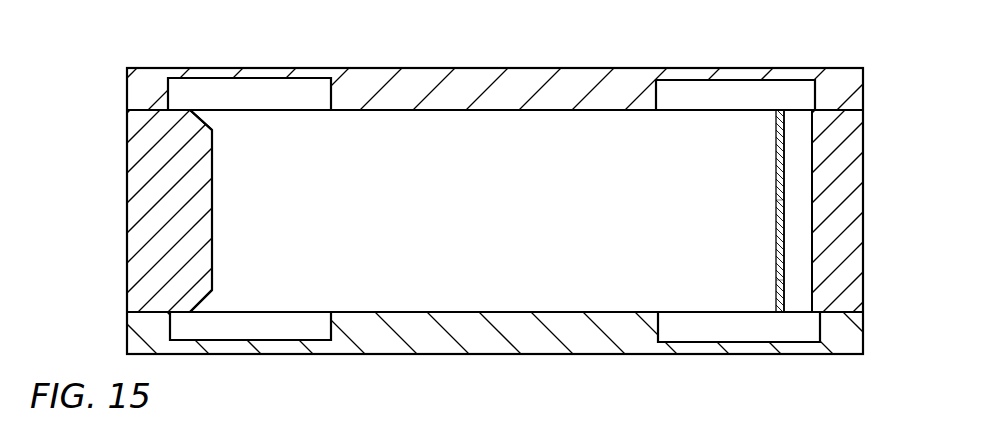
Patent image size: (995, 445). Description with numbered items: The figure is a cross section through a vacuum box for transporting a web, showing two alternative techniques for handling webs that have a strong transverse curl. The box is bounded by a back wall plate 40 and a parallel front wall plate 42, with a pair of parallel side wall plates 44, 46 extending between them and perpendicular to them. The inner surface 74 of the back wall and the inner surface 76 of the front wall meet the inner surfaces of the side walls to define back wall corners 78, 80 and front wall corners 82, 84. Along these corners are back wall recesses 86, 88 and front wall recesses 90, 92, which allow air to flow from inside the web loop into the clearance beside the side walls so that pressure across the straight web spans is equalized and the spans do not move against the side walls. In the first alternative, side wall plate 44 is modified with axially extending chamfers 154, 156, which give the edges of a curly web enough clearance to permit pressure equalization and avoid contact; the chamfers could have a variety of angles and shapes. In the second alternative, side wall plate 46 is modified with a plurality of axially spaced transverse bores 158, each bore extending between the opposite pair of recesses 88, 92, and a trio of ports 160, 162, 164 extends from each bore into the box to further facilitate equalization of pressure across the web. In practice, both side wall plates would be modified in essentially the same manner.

The back wall plate 40 is at (583, 80).
The front wall plate 42 is at (500, 345).
The side wall plate 44 is at (137, 190).
The side wall plate 46 is at (852, 173).
The inner surface of back wall 74 is at (412, 108).
The inner surface of front wall 76 is at (568, 312).
The back wall corner 78 is at (192, 110).
The back wall corner 80 is at (780, 108).
The front wall corner 82 is at (190, 312).
The front wall corner 84 is at (785, 312).
The back wall recess 86 is at (264, 92).
The back wall recess 88 is at (717, 93).
The front wall recess 90 is at (264, 328).
The front wall recess 92 is at (690, 330).
The chamfer 154 is at (205, 120).
The chamfer 156 is at (205, 297).
The transverse bore 158 is at (795, 192).
The port 160 is at (778, 139).
The port 162 is at (778, 211).
The port 164 is at (778, 280).